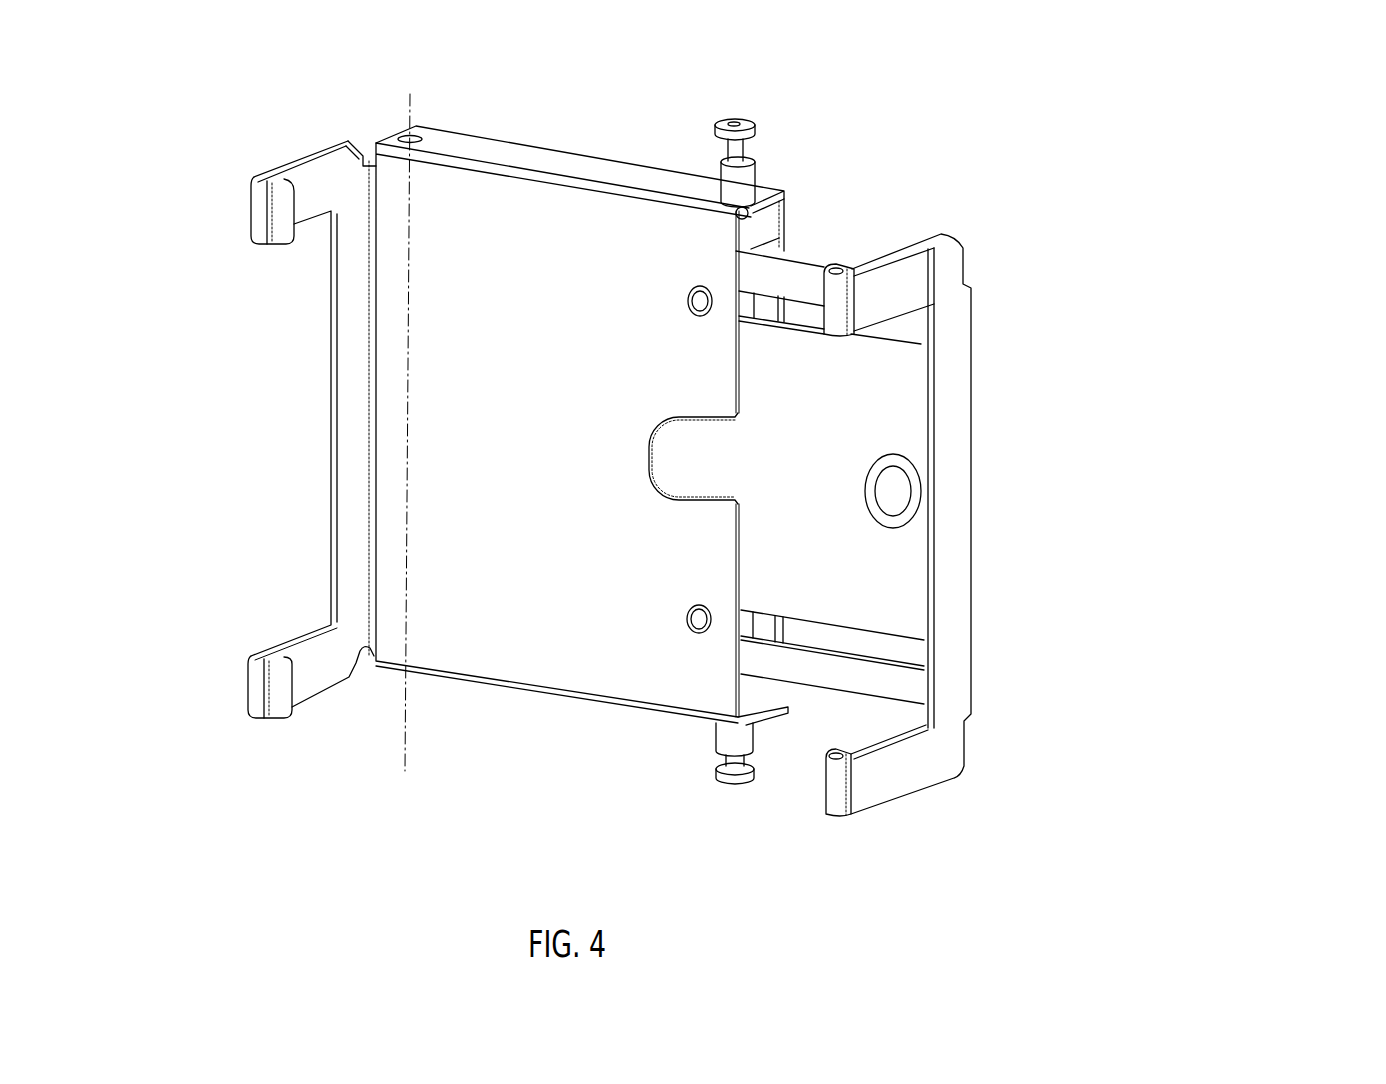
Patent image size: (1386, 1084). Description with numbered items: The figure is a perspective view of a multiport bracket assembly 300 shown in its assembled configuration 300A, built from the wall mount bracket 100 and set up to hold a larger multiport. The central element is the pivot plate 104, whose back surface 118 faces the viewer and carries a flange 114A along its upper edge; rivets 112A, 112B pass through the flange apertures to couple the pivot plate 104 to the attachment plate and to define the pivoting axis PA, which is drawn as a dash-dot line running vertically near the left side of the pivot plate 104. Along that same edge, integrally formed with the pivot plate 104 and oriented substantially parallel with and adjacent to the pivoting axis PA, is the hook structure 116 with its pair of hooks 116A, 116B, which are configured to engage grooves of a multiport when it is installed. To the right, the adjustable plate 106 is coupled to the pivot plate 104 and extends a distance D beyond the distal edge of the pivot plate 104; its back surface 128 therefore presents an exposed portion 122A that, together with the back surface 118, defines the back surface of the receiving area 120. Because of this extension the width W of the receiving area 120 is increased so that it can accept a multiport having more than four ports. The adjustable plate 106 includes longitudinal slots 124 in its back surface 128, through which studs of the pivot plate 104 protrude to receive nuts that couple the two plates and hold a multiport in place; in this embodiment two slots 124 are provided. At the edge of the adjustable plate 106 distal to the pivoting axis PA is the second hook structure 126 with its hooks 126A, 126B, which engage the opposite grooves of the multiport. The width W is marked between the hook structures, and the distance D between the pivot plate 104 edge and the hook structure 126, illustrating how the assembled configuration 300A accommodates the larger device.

The wall mount bracket 100 is at (1163, 272).
The pivot plate 104 is at (577, 628).
The adjustable plate 106 is at (893, 428).
The rivet 112A is at (735, 141).
The rivet 112B is at (735, 780).
The flange 114A is at (478, 153).
The hook structure 116 is at (355, 405).
The hook 116A is at (278, 202).
The hook 116B is at (275, 680).
The back surface 118 is at (500, 428).
The receiving area 120 is at (644, 756).
The exposed portion 122A is at (820, 698).
The longitudinal slot 124 is at (781, 345).
The hook structure 126 is at (943, 541).
The hook 126A is at (867, 282).
The hook 126B is at (870, 767).
The back surface 128 is at (795, 525).
The multiport bracket assembly 300 is at (1258, 148).
The assembled configuration 300A is at (1083, 784).
The distance D is at (922, 245).
The width W is at (824, 803).
The pivoting axis PA is at (407, 795).